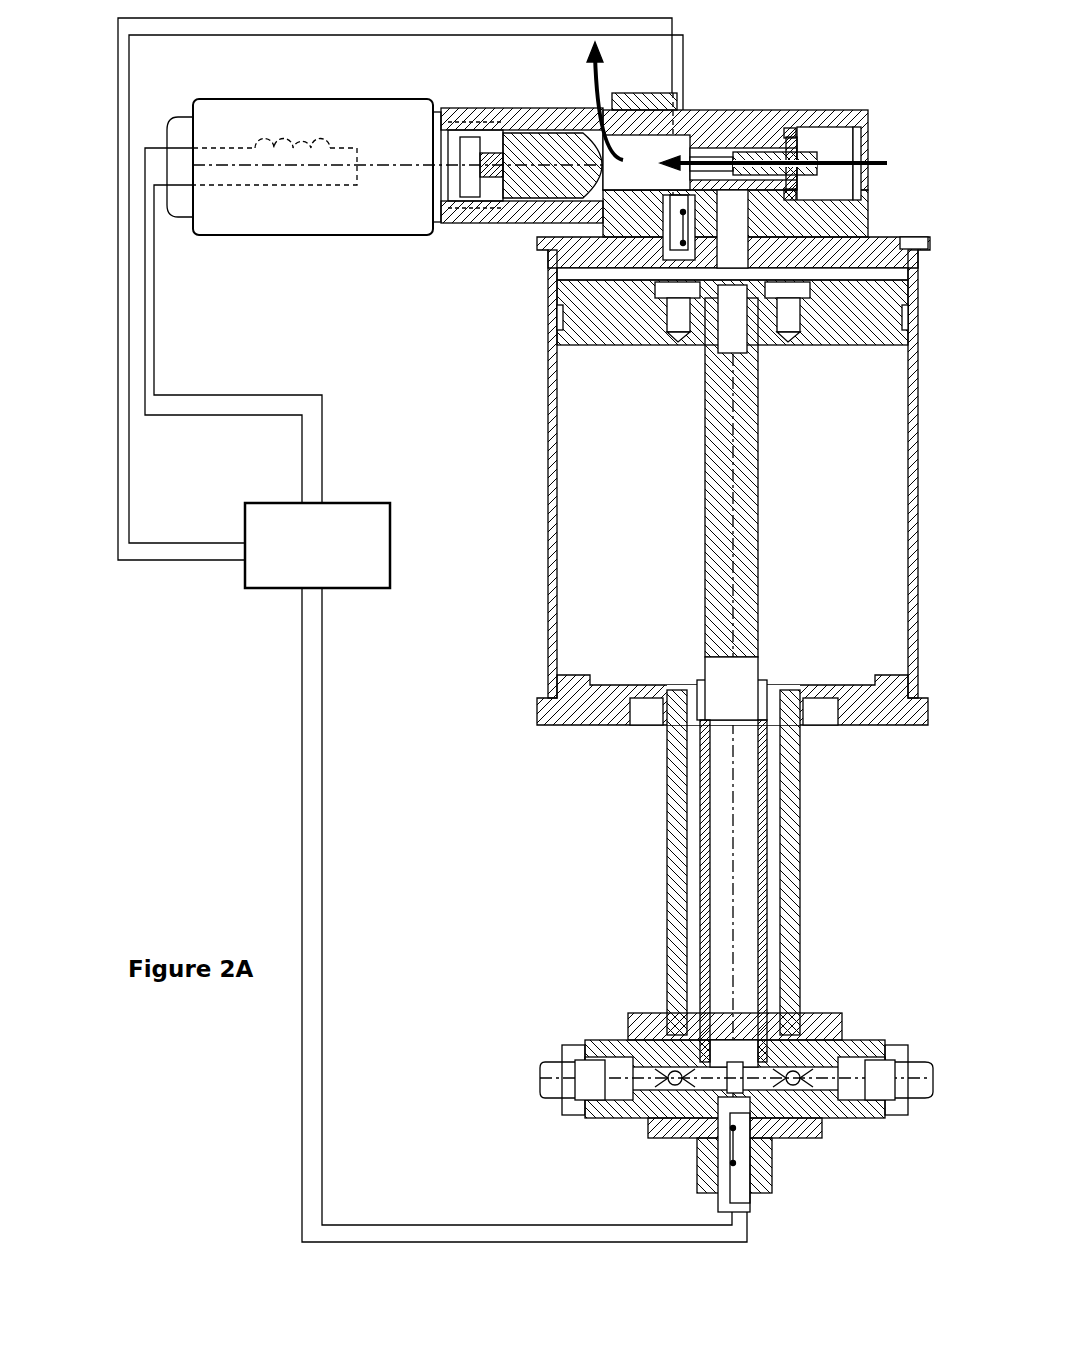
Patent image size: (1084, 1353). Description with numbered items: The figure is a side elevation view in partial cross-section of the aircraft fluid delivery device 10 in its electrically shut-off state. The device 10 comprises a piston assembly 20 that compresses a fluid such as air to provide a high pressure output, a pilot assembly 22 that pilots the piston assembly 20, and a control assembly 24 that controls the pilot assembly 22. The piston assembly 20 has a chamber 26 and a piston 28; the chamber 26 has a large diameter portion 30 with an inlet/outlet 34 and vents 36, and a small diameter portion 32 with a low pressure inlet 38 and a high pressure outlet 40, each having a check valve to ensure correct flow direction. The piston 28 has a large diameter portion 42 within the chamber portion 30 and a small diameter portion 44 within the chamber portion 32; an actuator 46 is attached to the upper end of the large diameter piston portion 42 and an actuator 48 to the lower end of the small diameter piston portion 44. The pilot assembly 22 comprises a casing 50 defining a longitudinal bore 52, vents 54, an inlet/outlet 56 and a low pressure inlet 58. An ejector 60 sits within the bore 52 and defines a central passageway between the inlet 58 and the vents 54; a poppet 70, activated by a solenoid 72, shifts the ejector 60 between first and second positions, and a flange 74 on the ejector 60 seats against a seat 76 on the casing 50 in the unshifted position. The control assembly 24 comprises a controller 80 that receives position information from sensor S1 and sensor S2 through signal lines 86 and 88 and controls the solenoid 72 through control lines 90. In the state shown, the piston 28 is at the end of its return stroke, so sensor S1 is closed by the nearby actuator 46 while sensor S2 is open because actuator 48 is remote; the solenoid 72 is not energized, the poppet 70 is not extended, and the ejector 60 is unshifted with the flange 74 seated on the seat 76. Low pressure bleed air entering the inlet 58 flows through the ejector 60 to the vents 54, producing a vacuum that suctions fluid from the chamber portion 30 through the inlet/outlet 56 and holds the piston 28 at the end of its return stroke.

The fluid delivery device 10 is at (488, 480).
The piston assembly 20 is at (530, 380).
The pilot assembly 22 is at (810, 88).
The control assembly 24 is at (410, 573).
The chamber 26 is at (552, 437).
The piston 28 is at (778, 487).
The large diameter portion 30 is at (814, 390).
The small diameter portion 32 is at (737, 995).
The inlet/outlet 34 is at (665, 248).
The vents 36 is at (638, 718).
The low pressure inlet 38 is at (875, 1088).
The high pressure outlet 40 is at (598, 1092).
The large diameter portion 42 is at (580, 327).
The small diameter portion 44 is at (745, 630).
The actuator 46 is at (712, 350).
The actuator 48 is at (742, 720).
The casing 50 is at (700, 140).
The longitudinal bore 52 is at (825, 163).
The vents 54 is at (592, 120).
The inlet/outlet 56 is at (733, 217).
The low pressure inlet 58 is at (863, 145).
The ejector 60 is at (703, 150).
The poppet 70 is at (545, 127).
The solenoid 72 is at (300, 202).
The flange 74 is at (800, 130).
The seat 76 is at (788, 128).
The controller 80 is at (317, 545).
The signal line 86 is at (683, 48).
The signal line 88 is at (568, 1242).
The control lines 90 is at (202, 415).
The sensor S1 is at (670, 242).
The sensor S2 is at (725, 1173).